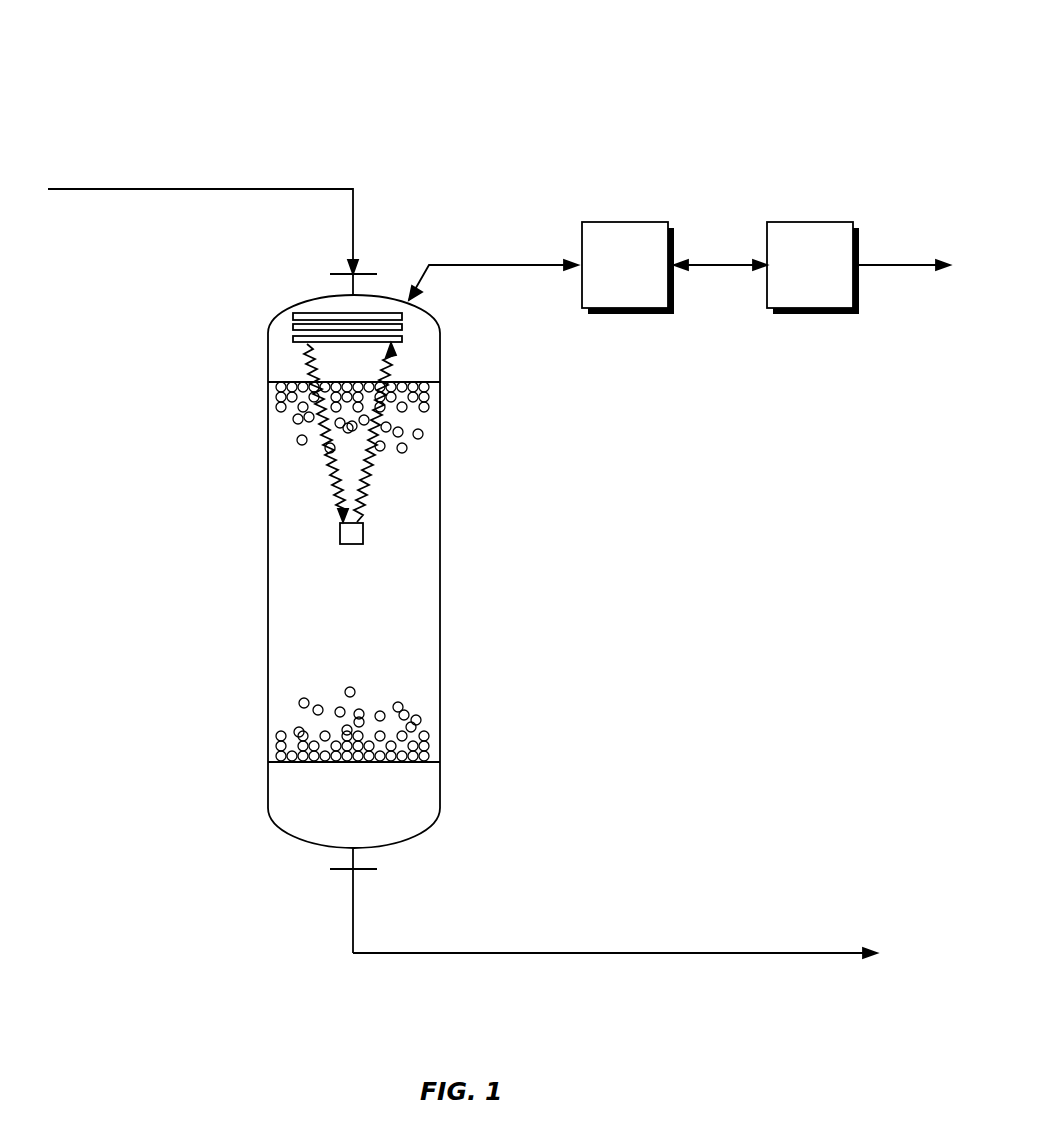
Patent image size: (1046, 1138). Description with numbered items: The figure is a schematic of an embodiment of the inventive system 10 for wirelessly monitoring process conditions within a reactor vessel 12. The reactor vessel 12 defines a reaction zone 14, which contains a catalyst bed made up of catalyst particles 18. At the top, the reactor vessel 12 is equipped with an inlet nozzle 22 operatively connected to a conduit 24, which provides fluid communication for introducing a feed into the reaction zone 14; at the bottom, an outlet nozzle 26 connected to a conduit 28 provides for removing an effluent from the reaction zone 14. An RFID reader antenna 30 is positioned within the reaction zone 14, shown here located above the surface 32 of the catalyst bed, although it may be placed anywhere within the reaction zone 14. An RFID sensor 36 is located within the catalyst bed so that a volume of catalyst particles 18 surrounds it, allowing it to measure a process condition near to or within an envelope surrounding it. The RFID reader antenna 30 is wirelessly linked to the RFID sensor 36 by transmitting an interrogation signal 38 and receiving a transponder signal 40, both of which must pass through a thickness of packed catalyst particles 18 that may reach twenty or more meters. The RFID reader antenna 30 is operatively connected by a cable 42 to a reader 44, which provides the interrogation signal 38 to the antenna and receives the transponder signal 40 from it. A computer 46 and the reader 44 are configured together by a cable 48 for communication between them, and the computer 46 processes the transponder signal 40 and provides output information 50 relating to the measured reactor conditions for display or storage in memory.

The system 10 is at (693, 63).
The reactor vessel 12 is at (275, 326).
The reaction zone 14 is at (299, 367).
The catalyst particles 18 is at (420, 420).
The inlet nozzle 22 is at (352, 283).
The conduit 24 is at (177, 189).
The outlet nozzle 26 is at (353, 855).
The conduit 28 is at (559, 953).
The RFID reader antenna 30 is at (404, 325).
The surface 32 is at (412, 380).
The RFID sensor 36 is at (364, 533).
The interrogation signal 38 is at (330, 488).
The transponder signal 40 is at (365, 502).
The cable 42 is at (487, 265).
The reader 44 is at (625, 222).
The computer 46 is at (810, 222).
The cable 48 is at (718, 265).
The output information 50 is at (905, 265).